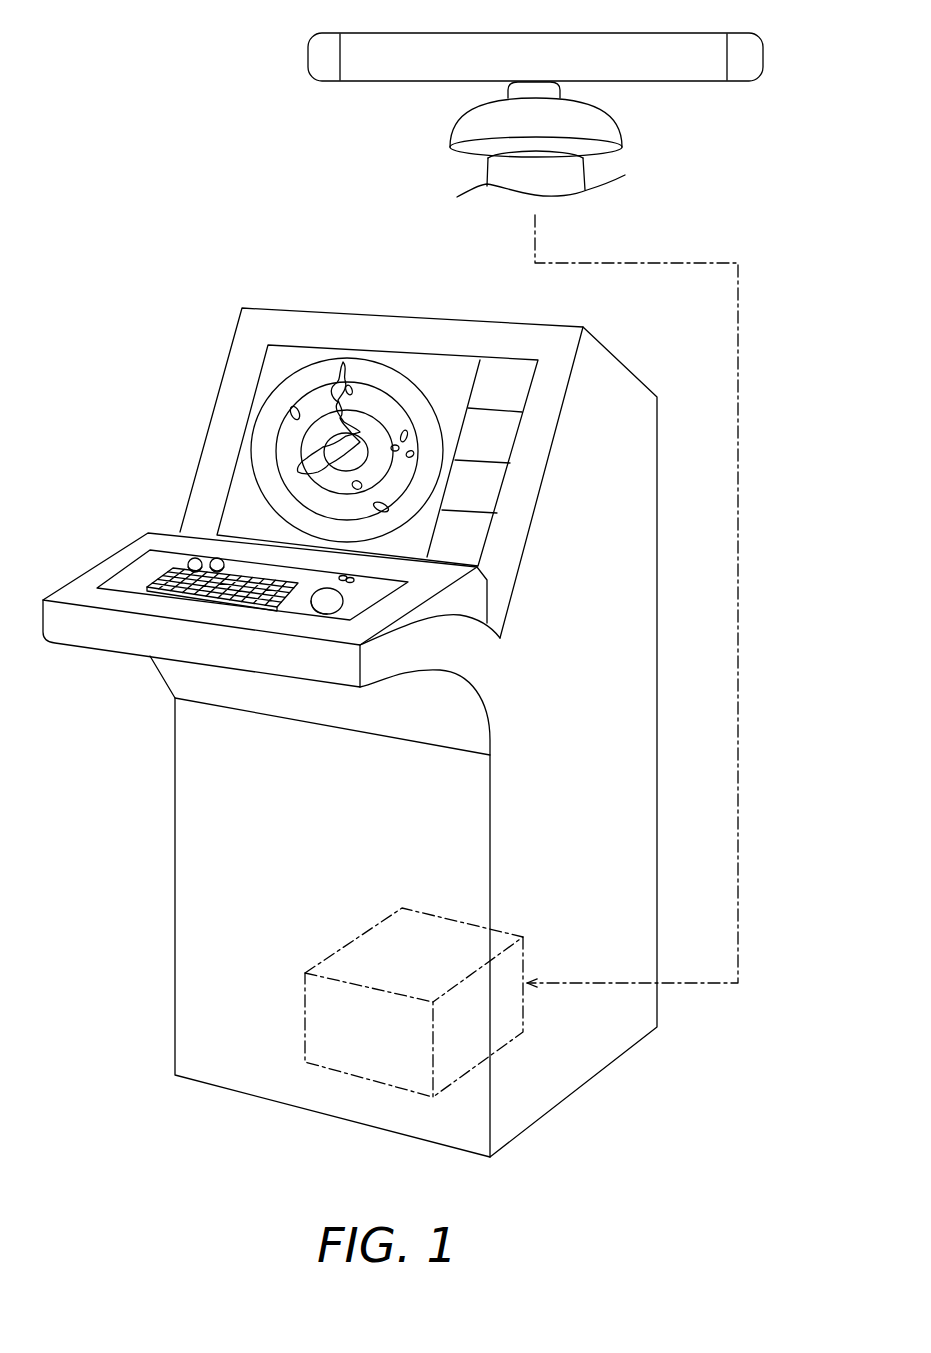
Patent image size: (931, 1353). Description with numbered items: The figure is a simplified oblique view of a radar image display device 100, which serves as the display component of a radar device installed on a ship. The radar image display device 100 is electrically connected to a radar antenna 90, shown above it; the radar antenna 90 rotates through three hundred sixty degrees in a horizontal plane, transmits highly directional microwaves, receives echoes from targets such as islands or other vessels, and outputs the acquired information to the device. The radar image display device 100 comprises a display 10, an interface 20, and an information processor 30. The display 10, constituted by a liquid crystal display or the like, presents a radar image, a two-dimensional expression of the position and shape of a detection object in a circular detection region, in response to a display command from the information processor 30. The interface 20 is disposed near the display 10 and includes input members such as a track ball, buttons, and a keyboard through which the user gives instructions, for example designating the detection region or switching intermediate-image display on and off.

The radar image display device 100 is at (135, 247).
The display 10 is at (243, 403).
The interface 20 is at (115, 567).
The information processor 30 is at (352, 927).
The radar antenna 90 is at (665, 121).